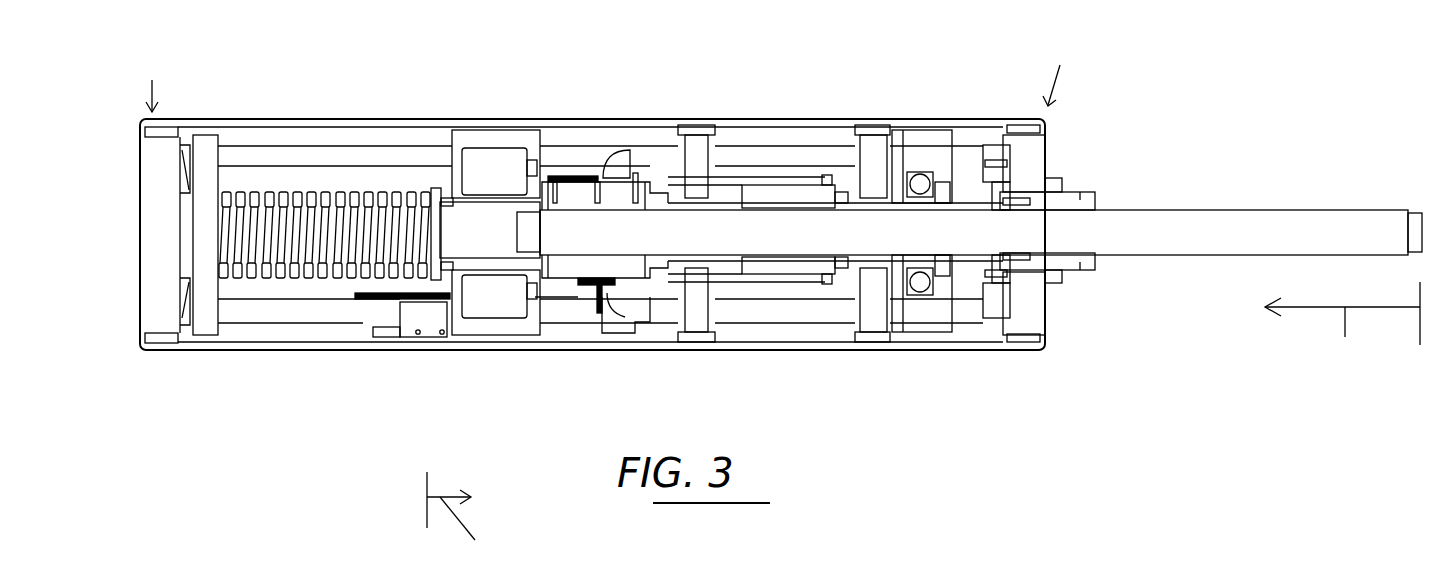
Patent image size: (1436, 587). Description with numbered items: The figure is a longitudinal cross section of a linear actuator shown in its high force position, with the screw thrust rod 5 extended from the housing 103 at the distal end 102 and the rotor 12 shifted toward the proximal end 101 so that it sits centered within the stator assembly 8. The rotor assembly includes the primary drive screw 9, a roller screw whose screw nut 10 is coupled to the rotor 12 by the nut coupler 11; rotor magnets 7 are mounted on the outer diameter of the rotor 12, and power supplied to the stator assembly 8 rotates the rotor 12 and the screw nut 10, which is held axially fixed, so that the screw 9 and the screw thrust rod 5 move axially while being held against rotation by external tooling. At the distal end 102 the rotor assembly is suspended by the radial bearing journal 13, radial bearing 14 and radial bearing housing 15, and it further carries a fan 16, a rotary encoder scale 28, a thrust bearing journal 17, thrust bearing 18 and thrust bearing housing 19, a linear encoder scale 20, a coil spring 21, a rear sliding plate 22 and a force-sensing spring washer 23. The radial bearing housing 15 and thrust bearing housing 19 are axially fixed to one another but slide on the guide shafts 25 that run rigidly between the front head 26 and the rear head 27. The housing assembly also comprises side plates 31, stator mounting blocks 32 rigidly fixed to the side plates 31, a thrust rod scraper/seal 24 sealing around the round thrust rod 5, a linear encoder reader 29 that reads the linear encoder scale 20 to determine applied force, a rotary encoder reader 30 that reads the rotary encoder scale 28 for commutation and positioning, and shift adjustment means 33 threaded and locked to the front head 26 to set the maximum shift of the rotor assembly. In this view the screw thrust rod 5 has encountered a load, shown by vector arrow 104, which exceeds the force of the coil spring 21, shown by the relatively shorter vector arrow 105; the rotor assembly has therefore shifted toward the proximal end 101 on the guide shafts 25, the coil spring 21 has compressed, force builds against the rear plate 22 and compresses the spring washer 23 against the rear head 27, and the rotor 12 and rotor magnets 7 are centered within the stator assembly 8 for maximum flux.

The screw thrust rod 5 is at (1220, 218).
The rotor magnets 7 is at (770, 182).
The stator assembly 8 is at (837, 163).
The primary drive screw 9 is at (573, 243).
The screw nut 10 is at (578, 192).
The nut coupler 11 is at (670, 160).
The rotor 12 is at (792, 202).
The radial bearing journal 13 is at (892, 135).
The radial bearing 14 is at (921, 180).
The radial bearing housing 15 is at (936, 155).
The fan 16 is at (622, 160).
The thrust bearing journal 17 is at (485, 265).
The thrust bearing 18 is at (493, 167).
The thrust bearing housing 19 is at (513, 336).
The linear encoder scale 20 is at (362, 300).
The coil spring 21 is at (283, 196).
The rear sliding plate 22 is at (205, 150).
The force-sensing spring washer 23 is at (190, 325).
The thrust rod scraper/seal 24 is at (937, 275).
The guide shafts 25 is at (397, 157).
The front head 26 is at (1033, 160).
The rear head 27 is at (152, 277).
The rotary encoder scale 28 is at (592, 300).
The linear encoder reader 29 is at (428, 320).
The rotary encoder reader 30 is at (622, 332).
The side plates 31 is at (723, 122).
The stator mounting blocks 32 is at (697, 302).
The shift adjustment means 33 is at (1070, 198).
The proximal end 101 is at (155, 77).
The distal end 102 is at (1079, 71).
The housing 103 is at (355, 123).
The load vector arrow 104 is at (1342, 326).
The spring force vector arrow 105 is at (466, 519).